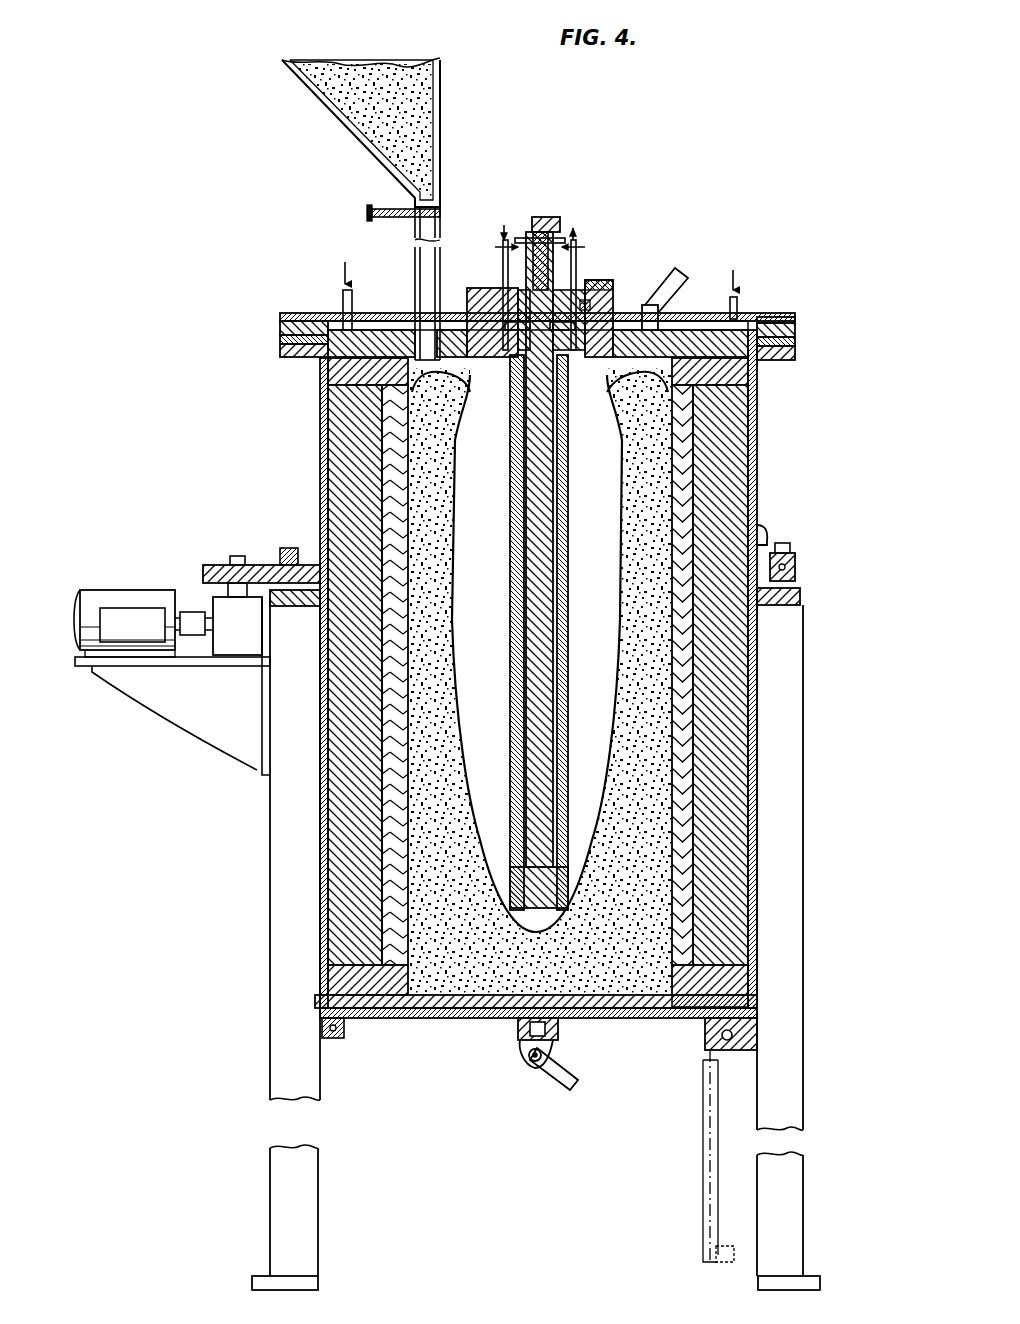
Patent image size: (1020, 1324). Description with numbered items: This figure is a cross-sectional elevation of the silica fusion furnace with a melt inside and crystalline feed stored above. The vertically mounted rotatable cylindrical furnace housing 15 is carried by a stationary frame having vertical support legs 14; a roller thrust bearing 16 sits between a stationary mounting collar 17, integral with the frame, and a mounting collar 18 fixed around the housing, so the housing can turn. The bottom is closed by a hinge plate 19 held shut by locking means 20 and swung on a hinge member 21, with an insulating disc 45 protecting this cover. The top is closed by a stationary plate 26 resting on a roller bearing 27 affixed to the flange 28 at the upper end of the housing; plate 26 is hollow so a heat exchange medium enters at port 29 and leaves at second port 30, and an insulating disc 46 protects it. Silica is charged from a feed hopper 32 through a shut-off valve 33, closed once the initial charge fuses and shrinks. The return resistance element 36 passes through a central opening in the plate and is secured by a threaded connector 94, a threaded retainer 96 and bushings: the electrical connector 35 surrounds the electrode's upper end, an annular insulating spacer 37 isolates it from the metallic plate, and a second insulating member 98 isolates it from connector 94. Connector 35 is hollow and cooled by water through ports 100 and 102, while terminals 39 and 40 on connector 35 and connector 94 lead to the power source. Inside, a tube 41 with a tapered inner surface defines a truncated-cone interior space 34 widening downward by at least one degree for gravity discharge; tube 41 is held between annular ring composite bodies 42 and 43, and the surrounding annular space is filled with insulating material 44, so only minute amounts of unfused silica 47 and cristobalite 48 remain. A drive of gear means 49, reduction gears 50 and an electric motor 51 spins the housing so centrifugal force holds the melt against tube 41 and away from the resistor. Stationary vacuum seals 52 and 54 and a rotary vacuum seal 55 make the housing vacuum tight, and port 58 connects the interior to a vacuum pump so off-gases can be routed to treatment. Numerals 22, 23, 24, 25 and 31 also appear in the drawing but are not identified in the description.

The vertical support legs 14 is at (270, 906).
The rotatable cylindrical furnace housing 15 is at (752, 468).
The roller thrust bearing 16 is at (797, 568).
The mounting collar 17 is at (800, 598).
The mounting collar 18 is at (768, 534).
The hinge plate 19 is at (462, 1018).
The locking means 20 is at (340, 1038).
The hinge member 21 is at (757, 1032).
The drain nut 22 is at (518, 1030).
The drain valve 23 is at (522, 1050).
The valve handle 24 is at (556, 1080).
The cavity 25 is at (633, 792).
The stationary plate 26 is at (796, 328).
The roller bearing 27 is at (796, 342).
The flange 28 is at (796, 355).
The port 29 is at (340, 293).
The second port 30 is at (742, 296).
The feed tube 31 is at (415, 305).
The feed hopper 32 is at (325, 107).
The shut-off valve 33 is at (368, 212).
The interior space 34 is at (600, 643).
The electrical connector 35 is at (520, 300).
The return resistance element 36 is at (510, 552).
The annular insulating spacer 37 is at (510, 326).
The terminal 39 is at (600, 284).
The terminal 40 is at (546, 217).
The tube 41 is at (682, 705).
The annular ring composite body 42 is at (750, 982).
The annular ring composite body 43 is at (345, 370).
The insulating material 44 is at (720, 858).
The insulating disc 45 is at (585, 1005).
The insulating disc 46 is at (328, 318).
The unfused silica 47 is at (680, 372).
The cristobalite 48 is at (675, 392).
The gear means 49 is at (272, 565).
The reduction gears 50 is at (220, 597).
The electric motor 51 is at (114, 590).
The stationary vacuum seal 52 is at (770, 318).
The stationary vacuum seal 54 is at (300, 350).
The rotary vacuum seal 55 is at (280, 316).
The port 58 is at (675, 290).
The threaded connector 94 is at (532, 240).
The threaded retainer 96 is at (563, 255).
The insulating member 98 is at (492, 290).
The port 100 is at (592, 283).
The port 102 is at (500, 240).